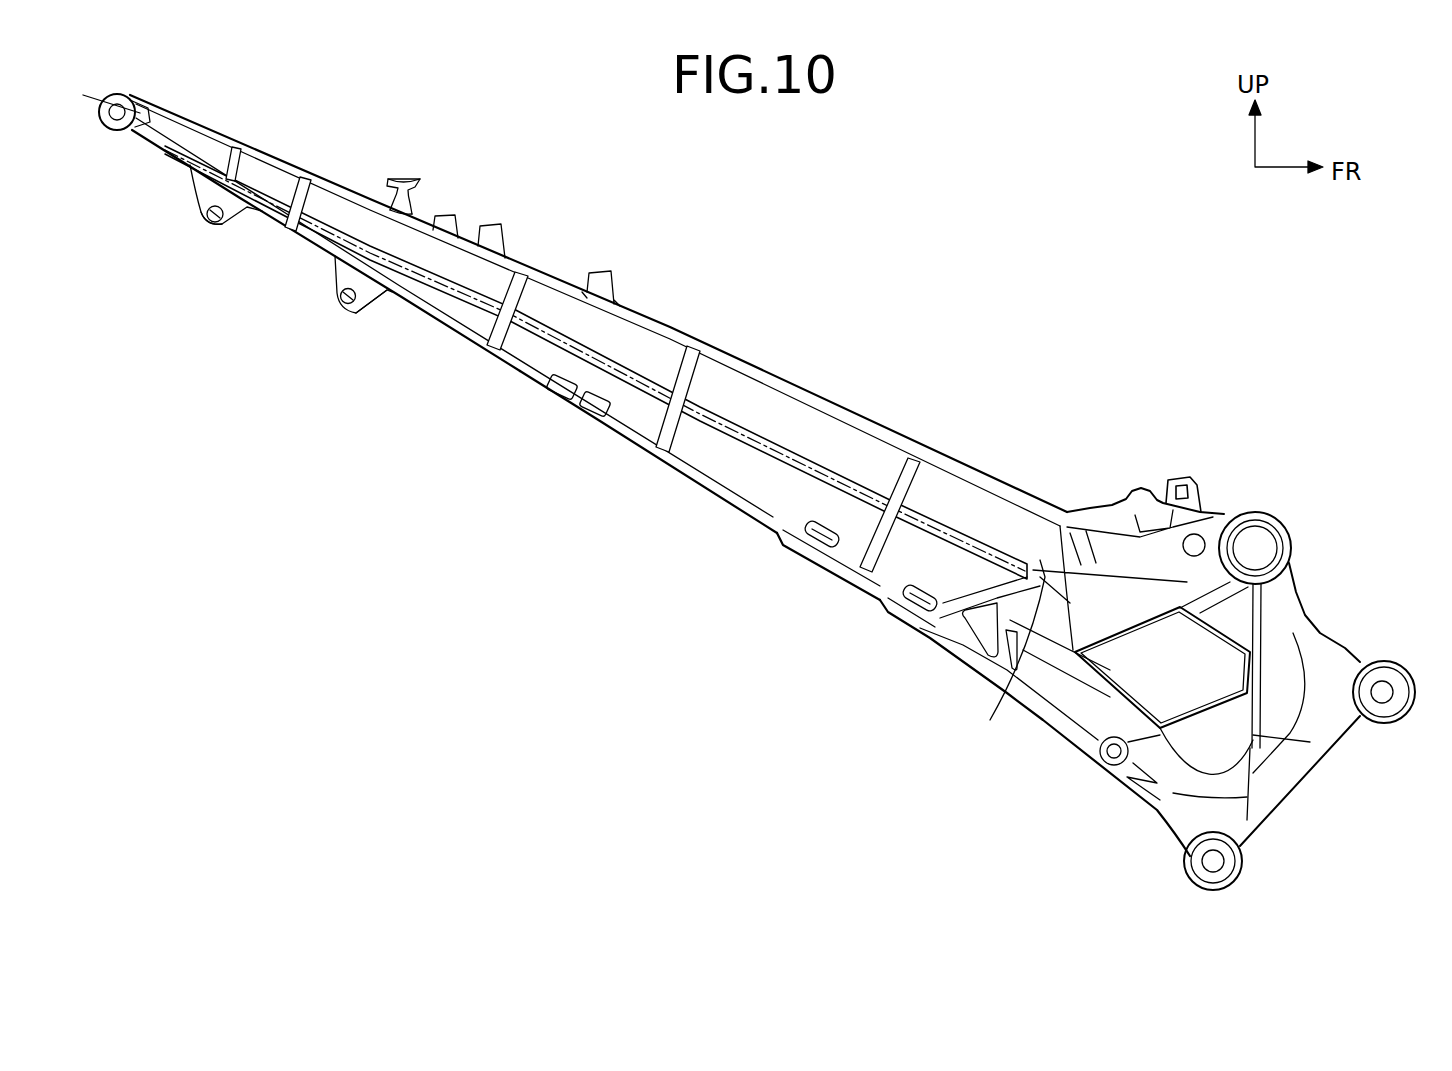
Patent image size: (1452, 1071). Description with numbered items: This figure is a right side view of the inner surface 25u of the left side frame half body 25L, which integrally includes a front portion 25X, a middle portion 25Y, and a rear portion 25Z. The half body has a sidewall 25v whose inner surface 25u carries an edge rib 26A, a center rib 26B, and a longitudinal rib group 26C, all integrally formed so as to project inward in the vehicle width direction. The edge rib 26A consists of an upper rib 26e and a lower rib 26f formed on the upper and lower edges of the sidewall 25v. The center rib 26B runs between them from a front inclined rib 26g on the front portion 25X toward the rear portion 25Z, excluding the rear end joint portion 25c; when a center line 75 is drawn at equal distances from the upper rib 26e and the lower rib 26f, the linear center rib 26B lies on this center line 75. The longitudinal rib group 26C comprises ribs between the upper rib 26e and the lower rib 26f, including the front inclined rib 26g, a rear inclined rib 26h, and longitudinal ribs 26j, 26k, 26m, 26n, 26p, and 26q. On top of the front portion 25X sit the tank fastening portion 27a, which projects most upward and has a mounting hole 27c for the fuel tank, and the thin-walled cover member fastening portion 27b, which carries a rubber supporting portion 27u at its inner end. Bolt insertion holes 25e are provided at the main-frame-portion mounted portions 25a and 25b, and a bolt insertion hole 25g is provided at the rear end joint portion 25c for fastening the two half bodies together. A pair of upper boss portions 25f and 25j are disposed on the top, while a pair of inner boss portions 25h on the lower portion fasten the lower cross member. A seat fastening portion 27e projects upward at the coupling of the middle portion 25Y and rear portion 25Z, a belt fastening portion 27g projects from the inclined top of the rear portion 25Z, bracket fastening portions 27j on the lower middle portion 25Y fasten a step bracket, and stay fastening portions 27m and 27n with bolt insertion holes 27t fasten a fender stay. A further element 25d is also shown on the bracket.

The rear end joint portion 25c is at (126, 92).
The bolt insertion hole 25g is at (105, 128).
The longitudinal rib 26q is at (227, 188).
The longitudinal rib 26p is at (293, 222).
The bolt insertion hole 27t is at (202, 236).
The stay fastening portion 27n is at (209, 232).
The rear portion 25Z is at (312, 257).
The longitudinal rib 26n is at (357, 242).
The stay fastening portion 27m is at (376, 315).
The longitudinal rib 26m is at (487, 342).
The belt fastening portion 27g is at (401, 176).
The upper boss portion 25j is at (446, 214).
The upper boss portion 25f is at (504, 243).
The seat fastening portion 27e is at (600, 270).
The longitudinal rib group 26C is at (666, 359).
The center rib 26B is at (703, 403).
The sidewall 25v is at (861, 456).
The inner surface 25u is at (827, 447).
The upper rib 26e is at (947, 465).
The edge rib 26A is at (989, 462).
The longitudinal rib 26k is at (647, 420).
The middle portion 25Y is at (727, 511).
The rear inclined rib 26h is at (780, 487).
The bracket fastening portion 27j is at (907, 623).
The inner boss portion 25h is at (553, 397).
The longitudinal rib 26j is at (845, 550).
The lower rib 26f is at (867, 600).
The left side frame half body 25L is at (1051, 341).
The cover member fastening portion 27b is at (1138, 487).
The rubber supporting portion 27u is at (1190, 478).
The tank fastening portion 27a is at (1292, 513).
The mounting hole 27c is at (1248, 545).
The front portion 25X is at (1304, 588).
The main-frame-portion mounted portion 25a is at (1402, 654).
The bolt insertion hole 25e is at (1383, 704).
The main-frame-portion mounted portion 25b is at (1253, 868).
The small boss 25d is at (1108, 760).
The front inclined rib 26g is at (1033, 657).
The center line 75 is at (950, 555).